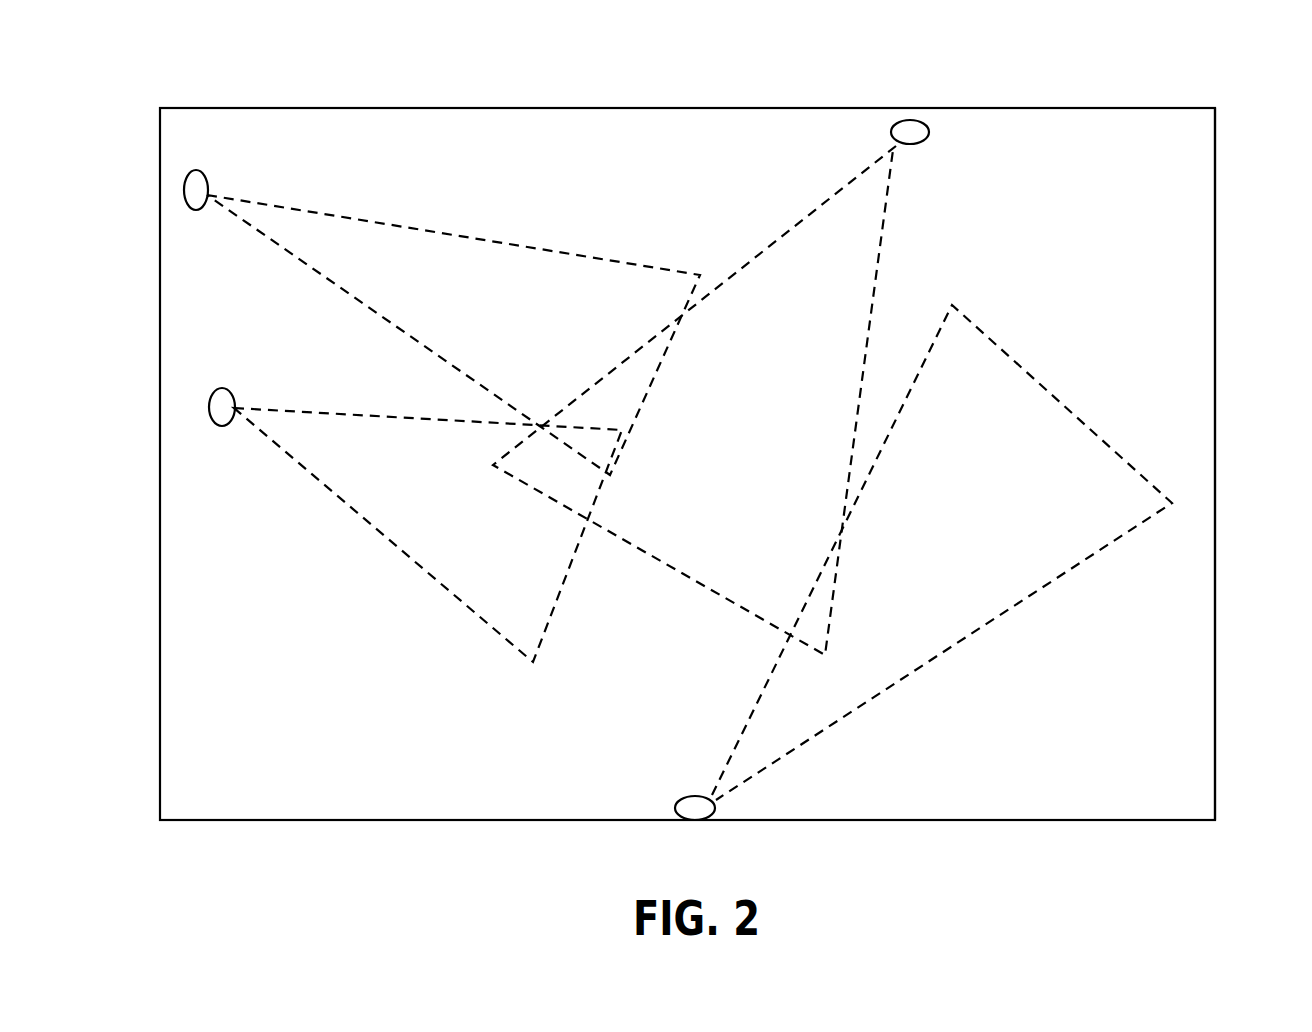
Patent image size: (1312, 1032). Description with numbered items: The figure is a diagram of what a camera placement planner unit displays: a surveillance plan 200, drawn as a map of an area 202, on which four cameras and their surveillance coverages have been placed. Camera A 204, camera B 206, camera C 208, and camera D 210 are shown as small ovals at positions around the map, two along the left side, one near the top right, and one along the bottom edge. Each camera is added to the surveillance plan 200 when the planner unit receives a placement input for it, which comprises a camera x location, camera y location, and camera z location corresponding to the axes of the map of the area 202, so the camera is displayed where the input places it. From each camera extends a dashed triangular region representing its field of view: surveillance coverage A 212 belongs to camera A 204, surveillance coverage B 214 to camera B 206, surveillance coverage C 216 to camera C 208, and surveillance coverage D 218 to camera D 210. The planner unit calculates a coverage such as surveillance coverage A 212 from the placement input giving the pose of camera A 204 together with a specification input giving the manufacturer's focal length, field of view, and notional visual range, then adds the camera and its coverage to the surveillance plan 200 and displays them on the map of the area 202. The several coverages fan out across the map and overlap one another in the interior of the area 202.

The surveillance plan 200 is at (675, 97).
The area 202 is at (1180, 255).
The camera A 204 is at (172, 185).
The camera B 206 is at (200, 403).
The camera C 208 is at (940, 143).
The camera D 210 is at (750, 797).
The surveillance coverage A 212 is at (352, 316).
The surveillance coverage B 214 is at (340, 520).
The surveillance coverage C 216 is at (795, 194).
The surveillance coverage D 218 is at (740, 678).